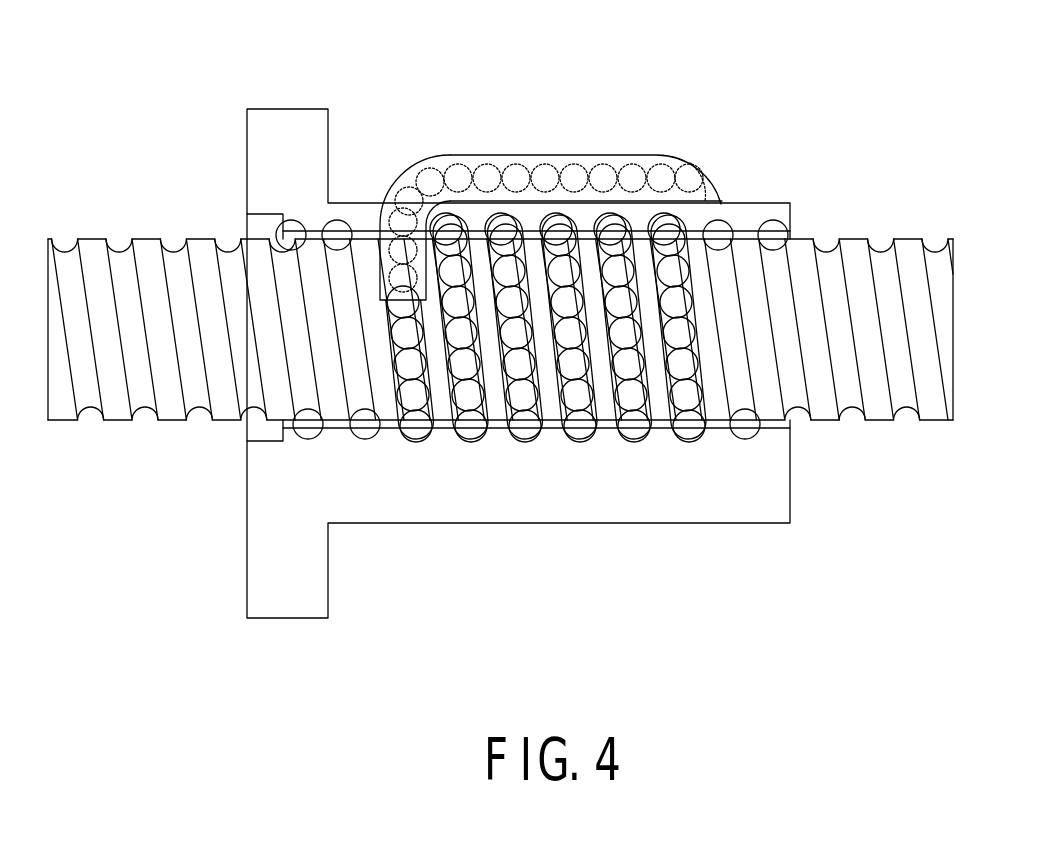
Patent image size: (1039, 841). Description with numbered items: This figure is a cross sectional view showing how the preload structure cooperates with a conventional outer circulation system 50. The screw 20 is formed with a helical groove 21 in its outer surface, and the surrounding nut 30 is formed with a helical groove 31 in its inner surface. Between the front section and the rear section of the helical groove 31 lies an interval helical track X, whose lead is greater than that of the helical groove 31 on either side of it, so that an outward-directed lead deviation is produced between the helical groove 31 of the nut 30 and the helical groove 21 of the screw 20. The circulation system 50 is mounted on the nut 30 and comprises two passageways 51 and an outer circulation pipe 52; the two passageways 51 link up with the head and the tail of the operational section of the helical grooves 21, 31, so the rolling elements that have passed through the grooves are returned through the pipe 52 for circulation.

The screw 20 is at (952, 288).
The helical groove 21 is at (880, 250).
The nut 30 is at (275, 123).
The helical groove 31 is at (726, 228).
The circulation system 50 is at (543, 158).
The passageways 51 is at (416, 192).
The outer circulation pipe 52 is at (487, 153).
The interval helical track X is at (583, 230).